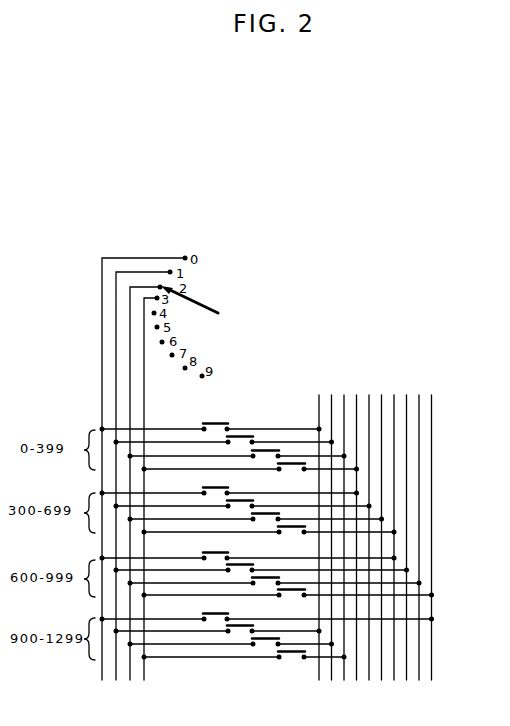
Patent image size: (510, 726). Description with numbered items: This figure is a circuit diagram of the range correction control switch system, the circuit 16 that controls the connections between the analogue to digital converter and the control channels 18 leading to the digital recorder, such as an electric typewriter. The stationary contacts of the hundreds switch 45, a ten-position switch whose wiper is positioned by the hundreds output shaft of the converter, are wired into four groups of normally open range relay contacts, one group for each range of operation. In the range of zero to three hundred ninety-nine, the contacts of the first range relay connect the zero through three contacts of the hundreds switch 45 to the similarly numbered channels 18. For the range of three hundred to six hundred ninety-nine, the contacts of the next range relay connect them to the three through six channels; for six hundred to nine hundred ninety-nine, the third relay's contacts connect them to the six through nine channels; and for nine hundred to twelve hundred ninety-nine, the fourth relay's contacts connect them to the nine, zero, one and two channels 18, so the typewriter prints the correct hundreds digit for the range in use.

The range correction control switch circuit 16 is at (253, 410).
The control channels 18 is at (436, 417).
The hundreds switch 45 is at (208, 305).